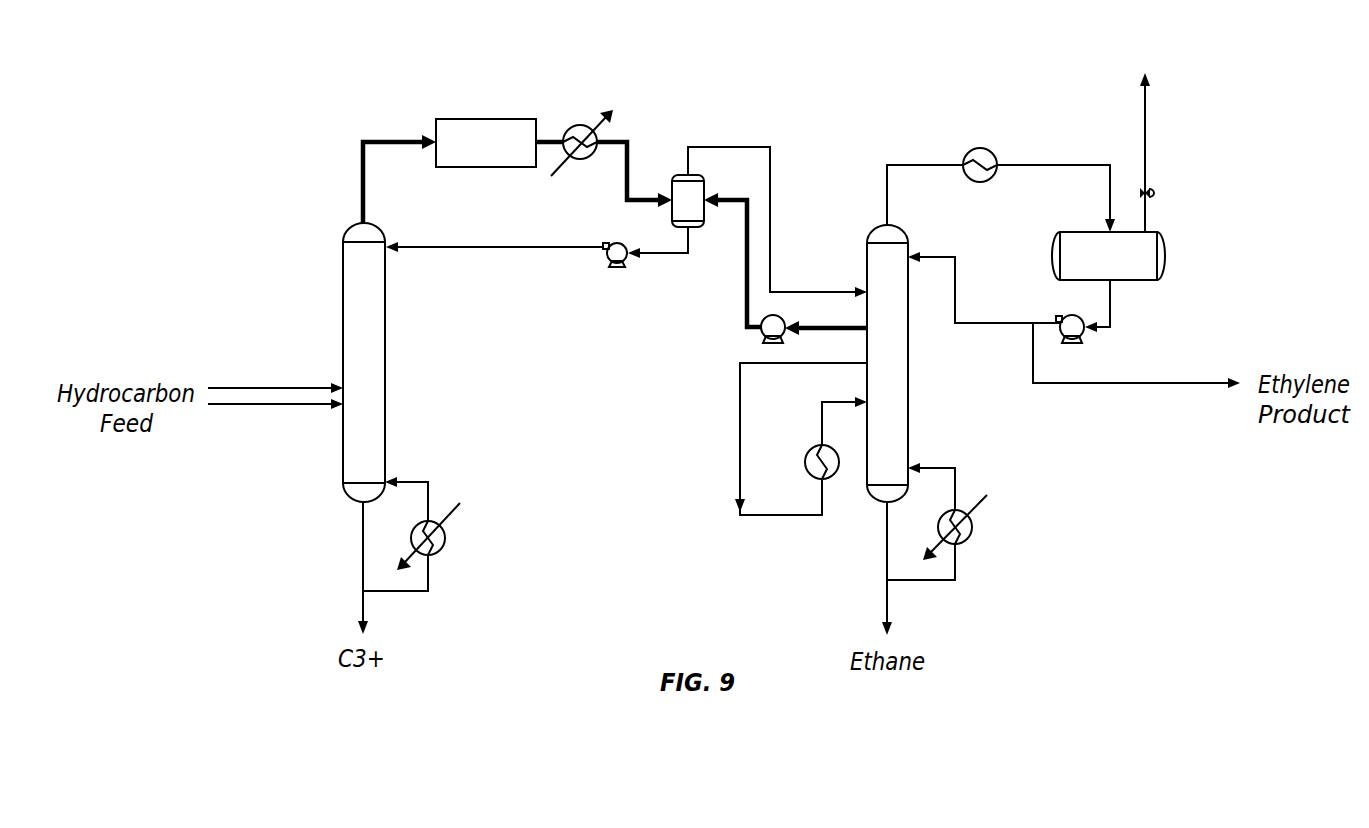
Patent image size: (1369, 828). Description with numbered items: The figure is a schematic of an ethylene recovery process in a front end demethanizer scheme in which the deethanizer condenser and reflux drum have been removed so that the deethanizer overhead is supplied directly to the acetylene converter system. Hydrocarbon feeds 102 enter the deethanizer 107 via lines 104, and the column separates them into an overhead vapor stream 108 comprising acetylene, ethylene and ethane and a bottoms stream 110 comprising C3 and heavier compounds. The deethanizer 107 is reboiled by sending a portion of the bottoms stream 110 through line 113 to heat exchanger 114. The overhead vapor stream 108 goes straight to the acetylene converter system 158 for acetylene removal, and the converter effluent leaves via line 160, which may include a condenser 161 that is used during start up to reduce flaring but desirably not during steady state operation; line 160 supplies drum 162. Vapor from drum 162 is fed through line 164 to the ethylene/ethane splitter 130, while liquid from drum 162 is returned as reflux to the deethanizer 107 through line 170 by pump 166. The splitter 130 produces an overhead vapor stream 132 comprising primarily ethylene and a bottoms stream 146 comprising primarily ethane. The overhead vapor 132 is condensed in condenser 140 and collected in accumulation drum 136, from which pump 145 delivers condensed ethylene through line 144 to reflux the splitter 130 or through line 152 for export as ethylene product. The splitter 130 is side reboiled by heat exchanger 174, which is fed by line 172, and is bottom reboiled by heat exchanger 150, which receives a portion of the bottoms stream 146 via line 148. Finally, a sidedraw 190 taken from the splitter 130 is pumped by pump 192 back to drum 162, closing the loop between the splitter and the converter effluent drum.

The hydrocarbon feeds 102 is at (300, 386).
The lines 104 is at (300, 406).
The deethanizer 107 is at (342, 297).
The deethanizer overhead vapor stream 108 is at (362, 185).
The bottoms stream 110 is at (363, 550).
The line 113 is at (405, 593).
The heat exchanger 114 is at (440, 555).
The acetylene converter system 158 is at (488, 119).
The line 160 is at (626, 177).
The condenser 161 is at (583, 120).
The drum 162 is at (705, 185).
The vapor line to second column 164 is at (727, 147).
The pump 166 is at (612, 270).
The line 170 is at (510, 248).
The ethylene/ethane splitter 130 is at (908, 345).
The overhead vapor stream 132 is at (886, 182).
The condenser 140 is at (980, 147).
The accumulation drum 136 is at (1170, 255).
The line 144 is at (1110, 300).
The pump 145 is at (1072, 345).
The line 152 is at (1200, 388).
The sidedraw 190 is at (866, 326).
The pump 192 is at (760, 330).
The line 172 is at (740, 445).
The heat exchanger 174 is at (820, 446).
The bottoms stream 146 is at (887, 545).
The line 148 is at (920, 582).
The heat exchanger 150 is at (975, 540).